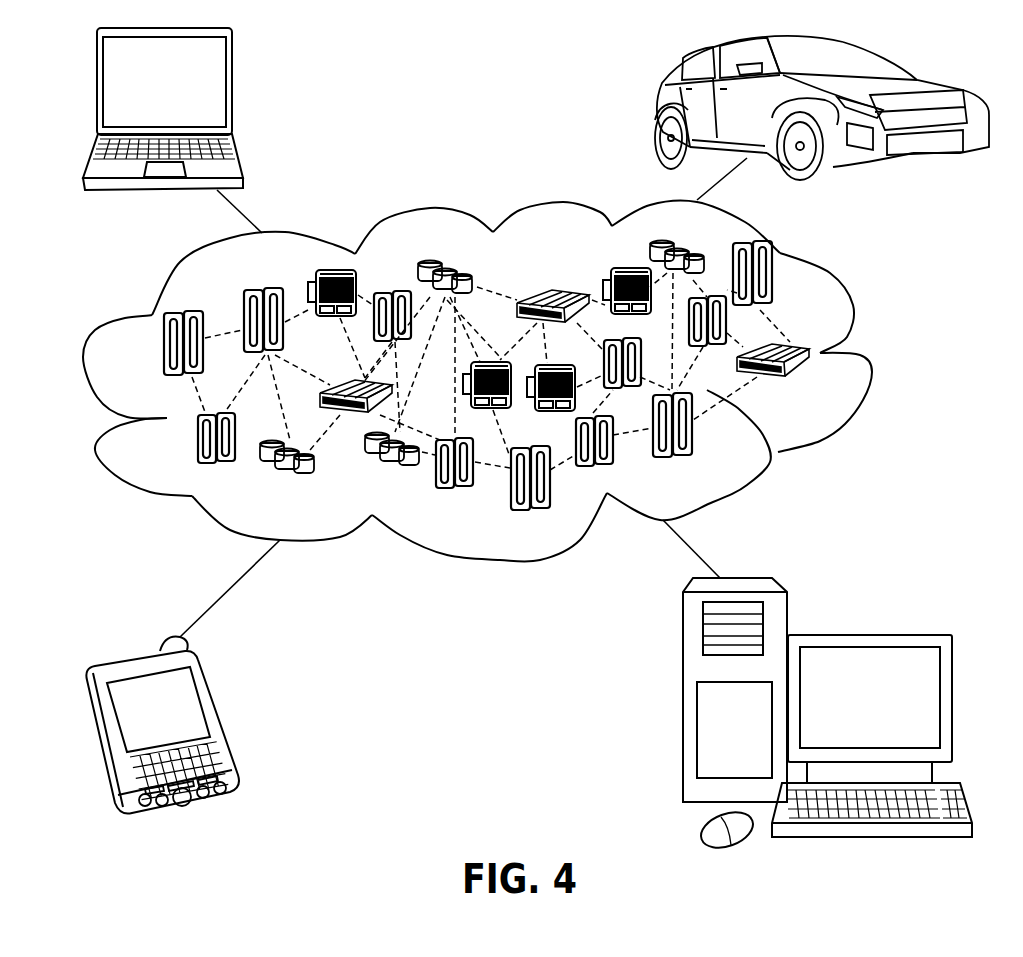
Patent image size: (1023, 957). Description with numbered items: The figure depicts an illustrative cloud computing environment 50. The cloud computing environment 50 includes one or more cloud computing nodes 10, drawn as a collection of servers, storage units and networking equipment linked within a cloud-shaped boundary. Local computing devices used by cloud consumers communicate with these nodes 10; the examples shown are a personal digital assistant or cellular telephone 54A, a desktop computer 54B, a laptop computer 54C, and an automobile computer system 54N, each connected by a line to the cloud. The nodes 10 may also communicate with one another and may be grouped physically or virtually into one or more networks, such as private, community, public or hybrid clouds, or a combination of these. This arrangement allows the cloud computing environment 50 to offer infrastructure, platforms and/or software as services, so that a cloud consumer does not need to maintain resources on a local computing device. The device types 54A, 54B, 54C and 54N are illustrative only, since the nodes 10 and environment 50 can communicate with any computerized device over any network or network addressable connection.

The cloud computing node 10 is at (812, 387).
The cloud computing environment 50 is at (504, 381).
The personal digital assistant or cellular telephone 54A is at (222, 720).
The desktop computer 54B is at (870, 635).
The laptop computer 54C is at (233, 89).
The automobile computer system 54N is at (657, 108).